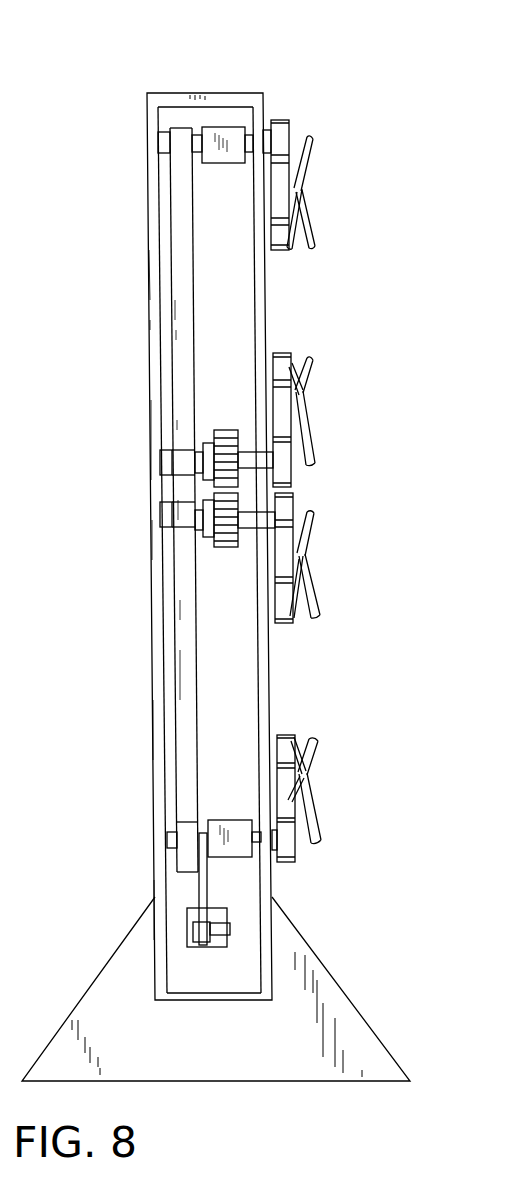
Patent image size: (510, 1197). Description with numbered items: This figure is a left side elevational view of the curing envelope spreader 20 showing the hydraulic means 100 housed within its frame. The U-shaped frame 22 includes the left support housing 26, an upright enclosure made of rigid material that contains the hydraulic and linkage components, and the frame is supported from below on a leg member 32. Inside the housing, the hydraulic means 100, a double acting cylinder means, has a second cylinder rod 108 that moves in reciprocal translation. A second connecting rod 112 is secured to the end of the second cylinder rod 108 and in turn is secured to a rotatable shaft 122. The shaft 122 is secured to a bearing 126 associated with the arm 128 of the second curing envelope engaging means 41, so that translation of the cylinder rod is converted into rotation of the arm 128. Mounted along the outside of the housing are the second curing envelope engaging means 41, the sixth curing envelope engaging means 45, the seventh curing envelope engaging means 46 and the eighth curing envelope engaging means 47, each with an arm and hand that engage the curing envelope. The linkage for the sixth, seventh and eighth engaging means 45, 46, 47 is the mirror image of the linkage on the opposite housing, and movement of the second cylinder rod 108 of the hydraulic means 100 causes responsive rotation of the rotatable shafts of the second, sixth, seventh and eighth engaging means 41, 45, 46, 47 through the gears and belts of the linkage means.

The curing envelope spreader 20 is at (238, 92).
The U-shaped frame 22 is at (148, 80).
The left support housing 26 is at (150, 233).
The leg member 32 is at (327, 998).
The second curing envelope engaging means 41 is at (323, 765).
The sixth curing envelope engaging means 45 is at (323, 525).
The seventh curing envelope engaging means 46 is at (320, 362).
The eighth curing envelope engaging means 47 is at (317, 150).
The hydraulic means 100 is at (213, 957).
The second cylinder rod 108 is at (205, 943).
The second connecting rod 112 is at (203, 890).
The rotatable shaft 122 is at (218, 818).
The bearing 126 is at (293, 858).
The arm 128 is at (287, 798).